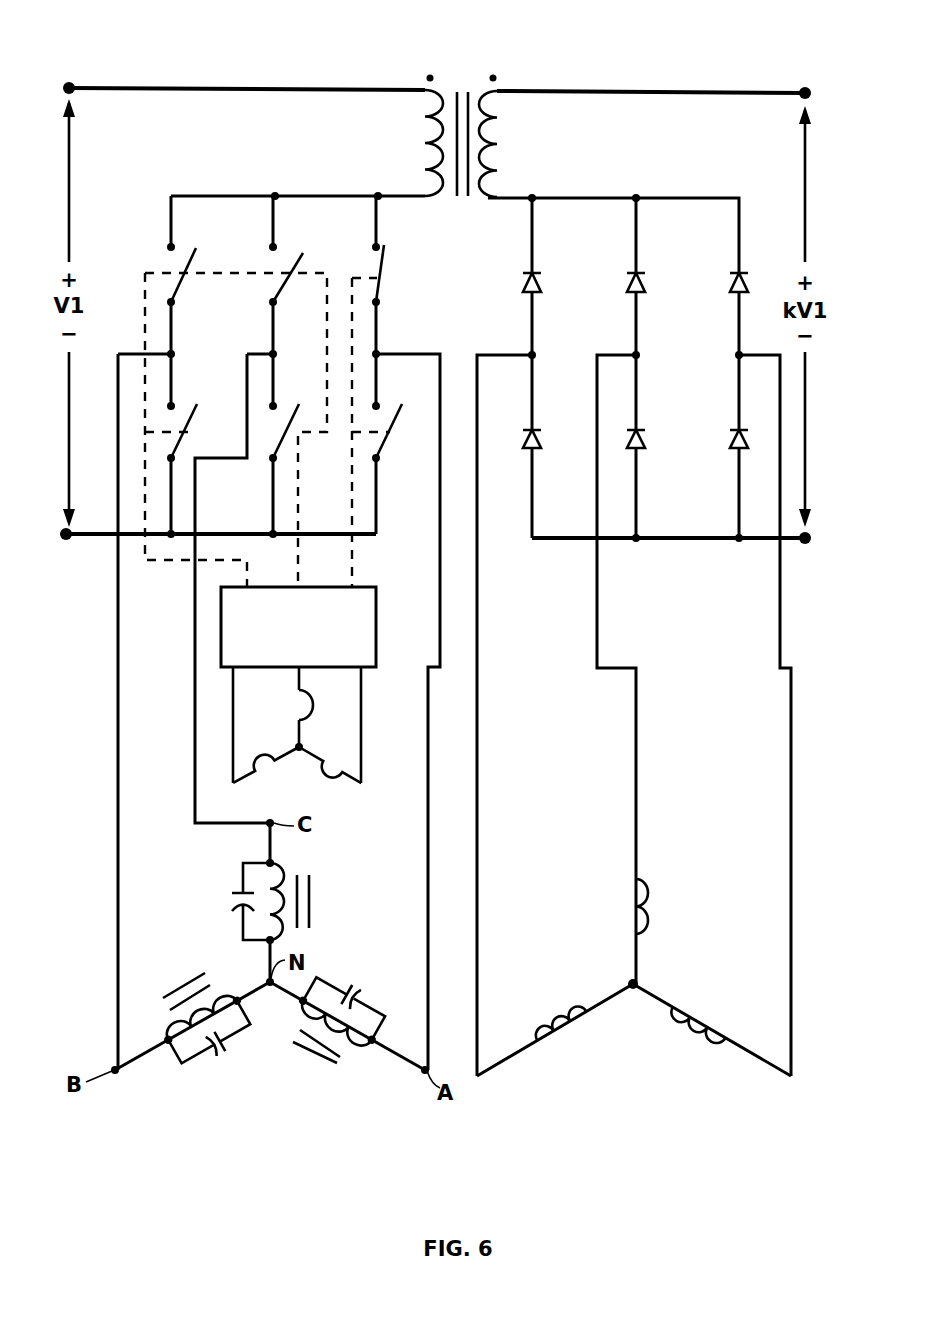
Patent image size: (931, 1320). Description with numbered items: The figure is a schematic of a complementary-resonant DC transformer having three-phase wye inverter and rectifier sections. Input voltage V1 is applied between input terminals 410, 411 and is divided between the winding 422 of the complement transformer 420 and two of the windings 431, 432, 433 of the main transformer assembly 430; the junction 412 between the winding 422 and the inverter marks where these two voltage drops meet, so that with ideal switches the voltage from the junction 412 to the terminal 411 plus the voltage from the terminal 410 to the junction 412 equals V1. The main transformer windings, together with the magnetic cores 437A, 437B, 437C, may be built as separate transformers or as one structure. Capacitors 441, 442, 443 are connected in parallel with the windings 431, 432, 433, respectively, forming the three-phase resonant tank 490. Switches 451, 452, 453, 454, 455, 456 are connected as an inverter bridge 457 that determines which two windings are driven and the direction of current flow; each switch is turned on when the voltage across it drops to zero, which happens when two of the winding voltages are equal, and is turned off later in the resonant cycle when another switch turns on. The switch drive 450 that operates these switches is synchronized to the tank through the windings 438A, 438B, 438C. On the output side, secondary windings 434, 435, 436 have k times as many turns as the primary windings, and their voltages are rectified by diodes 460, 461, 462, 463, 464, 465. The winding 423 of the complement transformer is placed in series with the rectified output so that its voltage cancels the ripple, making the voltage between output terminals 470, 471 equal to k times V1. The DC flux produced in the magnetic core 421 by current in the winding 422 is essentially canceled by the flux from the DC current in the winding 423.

The input terminal 410 is at (81, 88).
The input terminal 411 is at (78, 538).
The junction 412 is at (276, 194).
The complement transformer 420 is at (463, 48).
The magnetic core 421 is at (456, 198).
The winding 422 is at (423, 93).
The winding 423 is at (503, 93).
The main transformer assembly 430 is at (516, 1134).
The winding 431 is at (352, 1045).
The winding 432 is at (180, 1018).
The winding 433 is at (275, 877).
The secondary winding 434 is at (713, 1045).
The secondary winding 435 is at (578, 1006).
The secondary winding 436 is at (641, 884).
The magnetic core 437A is at (293, 1042).
The magnetic core 437B is at (206, 972).
The magnetic core 437C is at (312, 922).
The winding 438A is at (335, 774).
The winding 438B is at (273, 766).
The winding 438C is at (297, 713).
The capacitor 441 is at (335, 983).
The capacitor 442 is at (203, 1062).
The capacitor 443 is at (242, 866).
The switch drive 450 is at (366, 587).
The switch 451 is at (188, 270).
The switch 452 is at (300, 262).
The switch 453 is at (383, 270).
The switch 454 is at (178, 438).
The switch 455 is at (272, 440).
The switch 456 is at (382, 462).
The inverter bridge 457 is at (237, 165).
The diode 460 is at (535, 265).
The diode 461 is at (639, 265).
The diode 462 is at (738, 305).
The diode 463 is at (535, 418).
The diode 464 is at (639, 418).
The diode 465 is at (738, 458).
The output terminal 470 is at (792, 93).
The output terminal 471 is at (792, 541).
The three-phase resonant tank 490 is at (256, 1100).